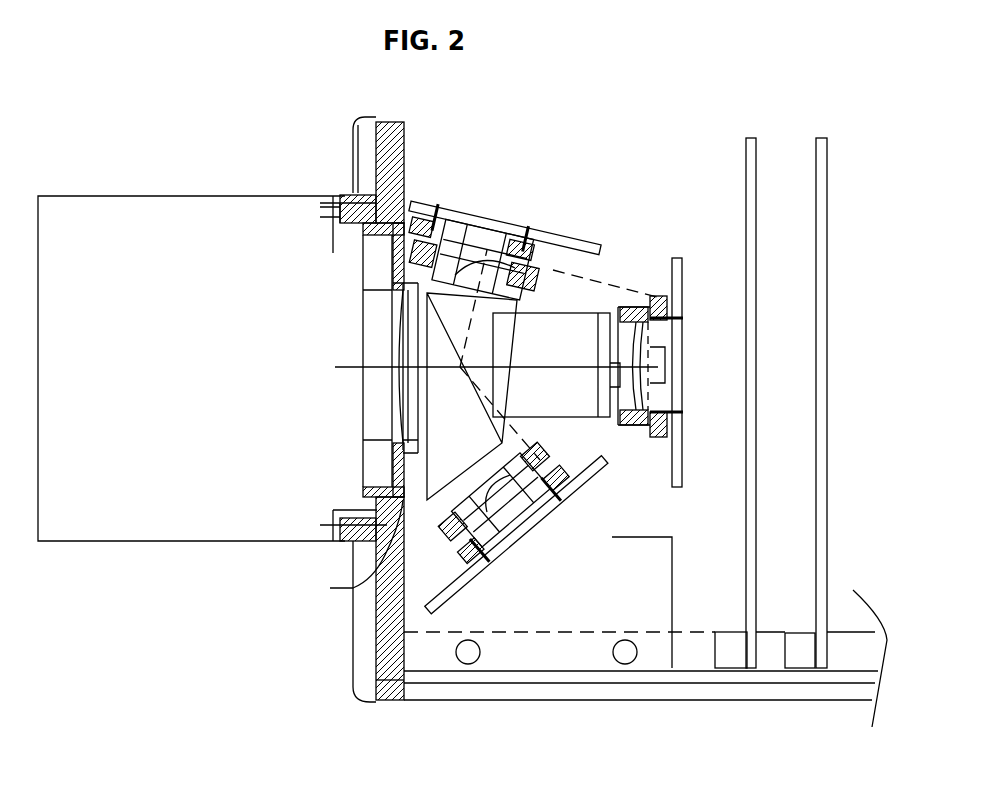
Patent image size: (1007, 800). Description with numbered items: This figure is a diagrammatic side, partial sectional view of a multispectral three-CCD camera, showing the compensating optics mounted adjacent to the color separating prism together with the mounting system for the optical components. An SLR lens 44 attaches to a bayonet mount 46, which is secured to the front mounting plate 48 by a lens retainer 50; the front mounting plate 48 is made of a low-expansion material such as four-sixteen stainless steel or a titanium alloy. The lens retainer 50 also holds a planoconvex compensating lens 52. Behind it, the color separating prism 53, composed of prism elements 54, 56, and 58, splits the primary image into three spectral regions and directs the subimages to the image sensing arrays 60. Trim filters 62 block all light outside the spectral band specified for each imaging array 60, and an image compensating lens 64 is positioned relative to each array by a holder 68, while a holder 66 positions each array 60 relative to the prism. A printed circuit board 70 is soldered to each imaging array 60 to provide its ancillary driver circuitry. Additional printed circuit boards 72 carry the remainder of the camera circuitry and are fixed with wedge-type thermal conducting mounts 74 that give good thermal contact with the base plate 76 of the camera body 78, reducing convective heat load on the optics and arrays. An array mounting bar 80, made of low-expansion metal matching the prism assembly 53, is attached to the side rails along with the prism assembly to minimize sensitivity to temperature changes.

The SLR lens 44 is at (133, 541).
The bayonet mount 46 is at (330, 217).
The front mounting plate 48 is at (404, 143).
The lens retainer 50 is at (340, 176).
The planoconvex compensating lens 52 is at (400, 327).
The color separating prism 53 is at (353, 588).
The prism element 54 is at (400, 388).
The prism element 56 is at (363, 305).
The prism element 58 is at (550, 313).
The image sensing array 60 is at (463, 248).
The trim filter 62 is at (502, 275).
The image compensating lens 64 is at (502, 258).
The holder 66 is at (418, 212).
The holder 68 is at (460, 232).
The printed circuit board 70 is at (600, 247).
The printed circuit board 72 is at (745, 190).
The wedge-type thermal conducting mount 74 is at (730, 648).
The base plate 76 is at (530, 700).
The camera body 78 is at (353, 657).
The array mounting bar 80 is at (672, 553).